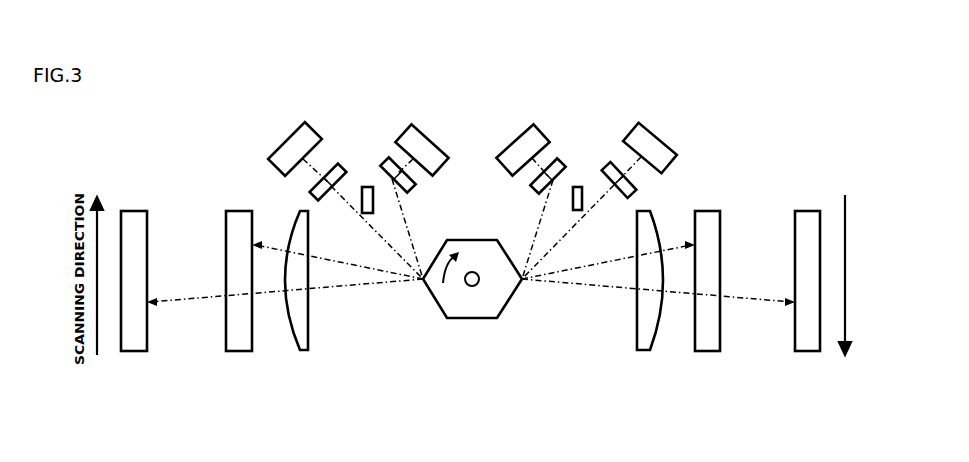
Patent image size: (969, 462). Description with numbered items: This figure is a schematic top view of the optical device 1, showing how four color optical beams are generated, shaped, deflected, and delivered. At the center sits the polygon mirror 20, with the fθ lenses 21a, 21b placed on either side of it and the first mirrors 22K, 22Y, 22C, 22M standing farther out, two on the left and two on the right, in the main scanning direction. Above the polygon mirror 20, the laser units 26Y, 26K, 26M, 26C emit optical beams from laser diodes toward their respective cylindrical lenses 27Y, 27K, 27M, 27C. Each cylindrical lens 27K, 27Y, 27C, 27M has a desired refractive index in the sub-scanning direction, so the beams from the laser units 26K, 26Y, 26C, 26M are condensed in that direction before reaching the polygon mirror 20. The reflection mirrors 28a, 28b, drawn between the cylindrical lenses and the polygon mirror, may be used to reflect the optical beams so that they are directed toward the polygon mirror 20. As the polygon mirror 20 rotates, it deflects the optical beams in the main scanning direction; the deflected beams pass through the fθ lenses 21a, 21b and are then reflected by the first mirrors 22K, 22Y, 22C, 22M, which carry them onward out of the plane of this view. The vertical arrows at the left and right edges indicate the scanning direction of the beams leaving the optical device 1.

The optical device 1 is at (375, 393).
The polygon mirror 20 is at (455, 320).
The fθ lens 21a is at (644, 211).
The fθ lens 21b is at (302, 211).
The first mirror 22K is at (134, 211).
The first mirror 22Y is at (240, 211).
The first mirror 22C is at (704, 211).
The first mirror 22M is at (804, 211).
The laser unit 26Y is at (290, 136).
The laser unit 26K is at (421, 133).
The laser unit 26M is at (523, 133).
The laser unit 26C is at (654, 133).
The cylindrical lens 27Y is at (337, 170).
The cylindrical lens 27K is at (391, 163).
The cylindrical lens 27M is at (557, 165).
The cylindrical lens 27C is at (612, 165).
The reflection mirror 28a is at (578, 187).
The reflection mirror 28b is at (367, 187).